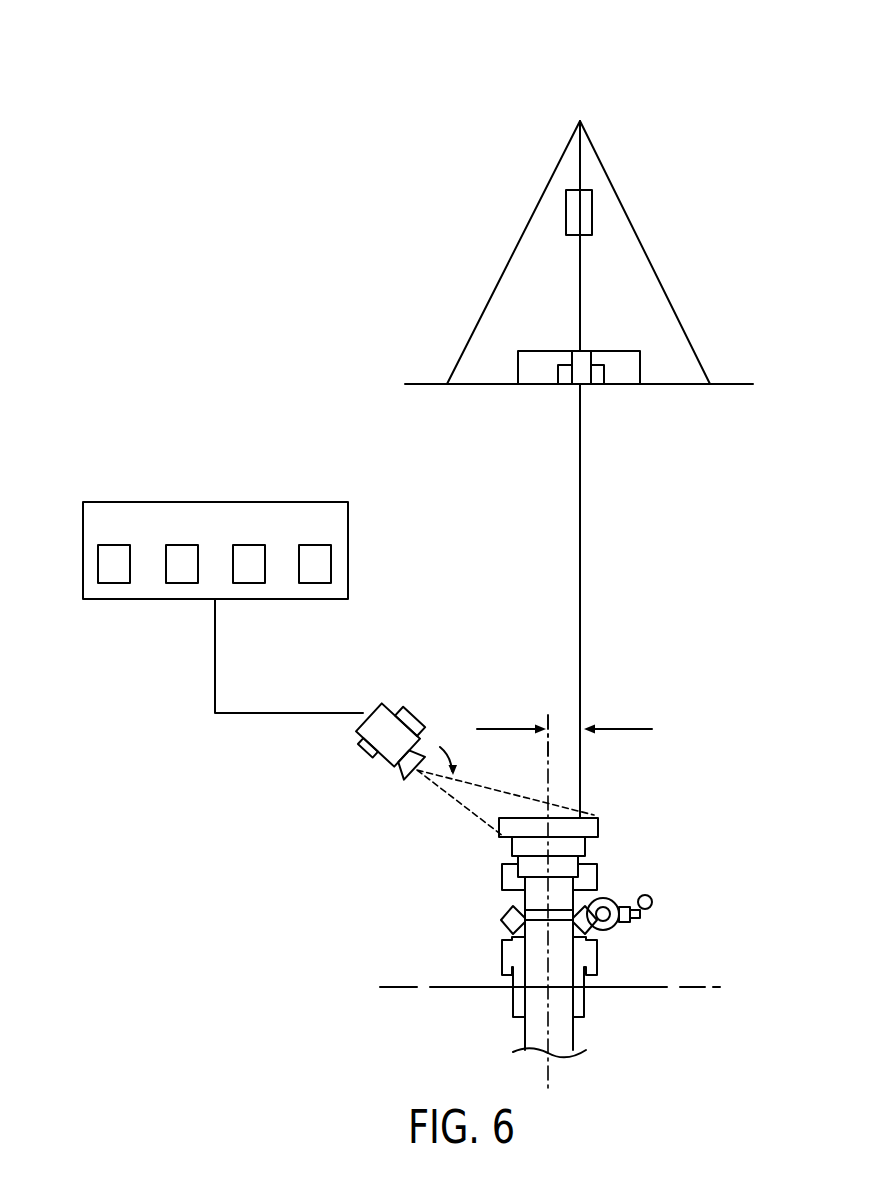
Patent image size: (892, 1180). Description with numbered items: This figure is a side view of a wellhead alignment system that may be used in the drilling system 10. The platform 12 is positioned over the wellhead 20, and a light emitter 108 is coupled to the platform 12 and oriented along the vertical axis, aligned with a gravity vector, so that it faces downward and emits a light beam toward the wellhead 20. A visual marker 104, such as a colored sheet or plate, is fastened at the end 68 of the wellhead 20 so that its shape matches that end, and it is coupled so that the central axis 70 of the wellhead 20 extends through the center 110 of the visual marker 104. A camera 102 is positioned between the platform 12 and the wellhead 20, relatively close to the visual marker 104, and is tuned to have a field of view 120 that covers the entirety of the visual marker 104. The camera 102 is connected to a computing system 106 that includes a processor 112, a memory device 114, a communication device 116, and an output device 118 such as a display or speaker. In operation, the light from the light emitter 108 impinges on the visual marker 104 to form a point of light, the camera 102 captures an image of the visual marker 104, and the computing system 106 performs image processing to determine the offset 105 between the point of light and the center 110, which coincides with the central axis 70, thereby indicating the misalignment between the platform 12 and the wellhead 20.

The drilling system 10 is at (760, 78).
The platform 12 is at (654, 169).
The wellhead 20 is at (512, 877).
The end of the wellhead 68 is at (507, 837).
The central axis 70 is at (550, 755).
The camera 102 is at (393, 702).
The visual marker 104 is at (567, 816).
The offset 105 is at (622, 729).
The computing system 106 is at (215, 502).
The light emitter 108 is at (580, 360).
The center of the visual marker 110 is at (545, 817).
The processor 112 is at (114, 583).
The memory device 114 is at (167, 560).
The communication device 116 is at (265, 563).
The output device 118 is at (315, 583).
The field of view 120 is at (436, 799).